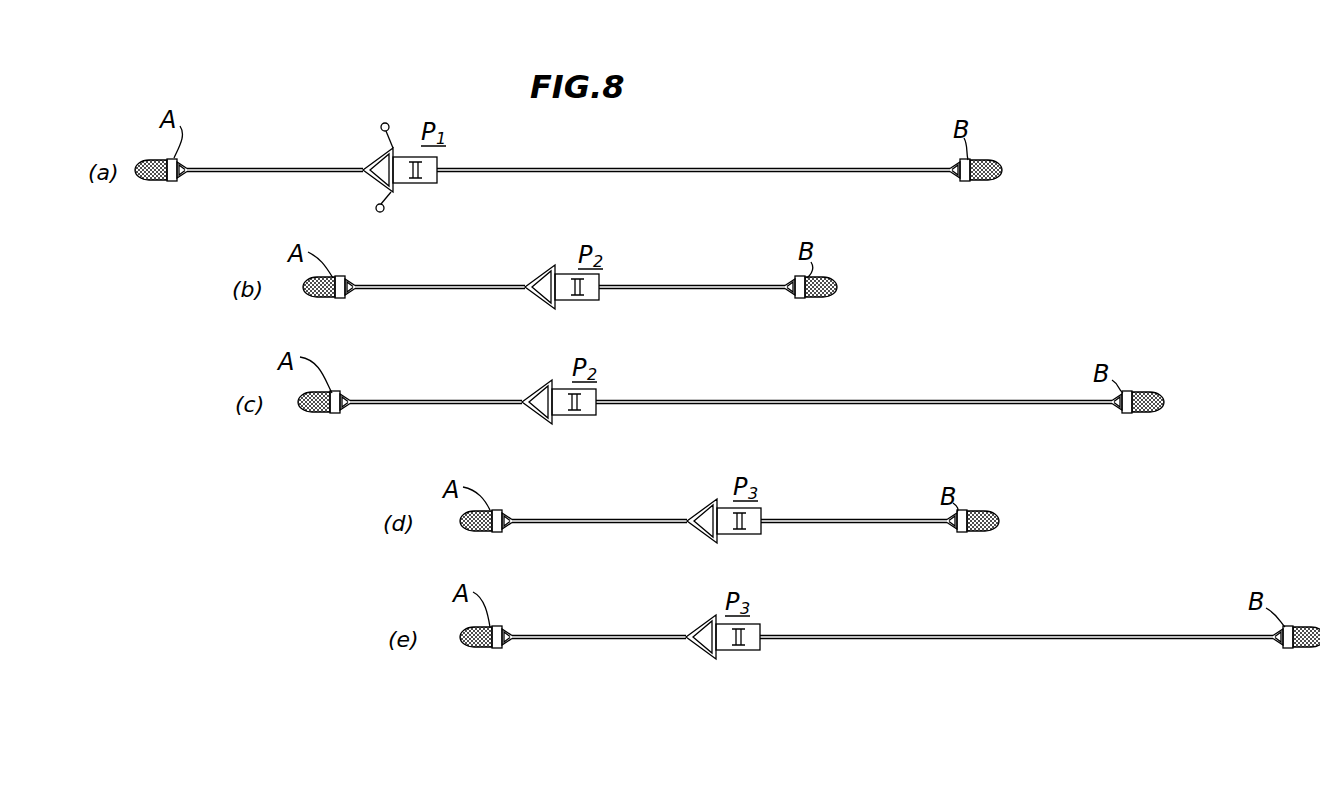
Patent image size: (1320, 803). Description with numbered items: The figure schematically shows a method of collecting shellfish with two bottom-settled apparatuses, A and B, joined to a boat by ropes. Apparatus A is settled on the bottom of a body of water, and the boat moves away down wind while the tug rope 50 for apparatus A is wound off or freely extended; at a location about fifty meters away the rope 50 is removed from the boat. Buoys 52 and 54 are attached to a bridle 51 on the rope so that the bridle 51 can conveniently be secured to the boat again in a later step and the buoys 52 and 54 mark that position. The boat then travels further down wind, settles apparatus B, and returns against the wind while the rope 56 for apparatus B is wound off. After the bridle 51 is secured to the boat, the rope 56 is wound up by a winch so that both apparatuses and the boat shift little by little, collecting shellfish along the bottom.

The tug rope 50 is at (437, 377).
The bridle 51 is at (542, 429).
The buoy 52 is at (384, 210).
The buoy 54 is at (389, 125).
The rope 56 is at (855, 382).